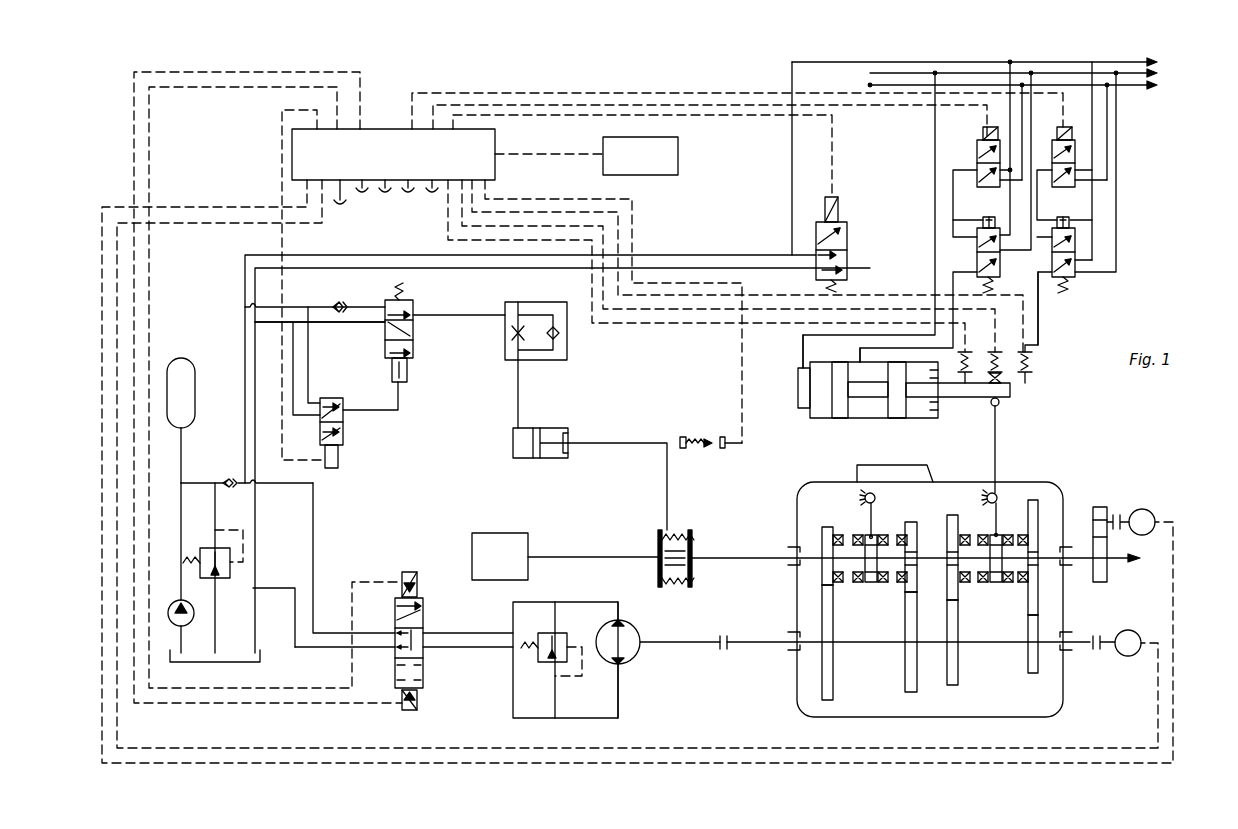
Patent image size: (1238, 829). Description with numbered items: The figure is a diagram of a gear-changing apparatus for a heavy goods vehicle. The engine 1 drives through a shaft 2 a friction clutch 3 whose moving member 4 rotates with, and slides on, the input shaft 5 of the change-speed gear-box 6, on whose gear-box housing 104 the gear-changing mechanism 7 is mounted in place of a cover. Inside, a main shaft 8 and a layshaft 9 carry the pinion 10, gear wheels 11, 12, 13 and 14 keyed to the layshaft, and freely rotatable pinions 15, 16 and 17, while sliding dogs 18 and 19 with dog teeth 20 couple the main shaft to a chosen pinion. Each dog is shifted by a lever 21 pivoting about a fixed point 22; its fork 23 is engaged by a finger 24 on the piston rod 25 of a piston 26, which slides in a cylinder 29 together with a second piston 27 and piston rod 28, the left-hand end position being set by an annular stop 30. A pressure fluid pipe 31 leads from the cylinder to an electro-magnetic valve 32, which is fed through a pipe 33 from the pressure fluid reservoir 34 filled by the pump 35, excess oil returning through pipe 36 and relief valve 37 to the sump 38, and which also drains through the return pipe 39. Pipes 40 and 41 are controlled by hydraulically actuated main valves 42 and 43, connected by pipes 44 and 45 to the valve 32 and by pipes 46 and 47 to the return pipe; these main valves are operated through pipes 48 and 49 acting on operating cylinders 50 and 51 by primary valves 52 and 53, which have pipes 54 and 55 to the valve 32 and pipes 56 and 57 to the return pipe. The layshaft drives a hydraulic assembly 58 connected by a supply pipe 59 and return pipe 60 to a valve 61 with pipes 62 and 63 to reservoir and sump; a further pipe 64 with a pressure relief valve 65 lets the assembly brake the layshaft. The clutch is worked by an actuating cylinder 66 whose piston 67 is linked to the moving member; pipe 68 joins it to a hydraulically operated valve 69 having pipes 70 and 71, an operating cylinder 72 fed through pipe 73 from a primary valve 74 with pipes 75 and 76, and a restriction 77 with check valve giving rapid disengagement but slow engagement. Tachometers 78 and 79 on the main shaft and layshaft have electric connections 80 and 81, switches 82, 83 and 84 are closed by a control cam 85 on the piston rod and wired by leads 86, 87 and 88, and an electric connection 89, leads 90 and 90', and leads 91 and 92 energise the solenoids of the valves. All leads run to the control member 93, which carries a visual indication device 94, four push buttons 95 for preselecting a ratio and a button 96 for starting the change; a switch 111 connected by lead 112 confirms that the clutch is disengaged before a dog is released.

The engine 1 is at (472, 543).
The shaft 2 is at (577, 557).
The friction clutch 3 is at (658, 582).
The moving member of the clutch 4 is at (667, 480).
The input shaft 5 is at (740, 558).
The change-speed gear-box 6 is at (797, 688).
The gear-changing mechanism 7 is at (857, 470).
The main shaft 8 is at (1107, 565).
The layshaft 9 is at (1088, 640).
The pinion 10 is at (824, 540).
The gear wheel 11 is at (822, 622).
The gear wheel 12 is at (905, 686).
The gear wheel 13 is at (958, 682).
The gear wheel 14 is at (1035, 673).
The pinion 15 is at (910, 524).
The pinion 16 is at (948, 530).
The pinion 17 is at (1038, 524).
The sliding dog 18 is at (871, 582).
The sliding dog 19 is at (996, 582).
The dog teeth 20 is at (838, 582).
The lever 21 is at (872, 530).
The fixed point 22 is at (864, 496).
The fork 23 is at (997, 408).
The finger 24 is at (991, 403).
The piston rod 25 is at (1010, 395).
The piston 26 is at (897, 418).
The second piston 27 is at (838, 418).
The piston rod 28 is at (862, 397).
The cylinder 29 is at (798, 410).
The annular stop 30 is at (860, 358).
The pressure fluid pipe 31 is at (935, 185).
The electro-magnetic two-position three-way valve 32 is at (847, 226).
The pipe 33 is at (426, 258).
The pressure fluid reservoir 34 is at (181, 420).
The pump 35 is at (175, 610).
The pipe 36 is at (216, 603).
The relief valve 37 is at (212, 548).
The sump 38 is at (215, 662).
The return pipe 39 is at (792, 76).
The pipe 40 is at (803, 345).
The pipe 41 is at (1040, 318).
The main valve 42 is at (1000, 272).
The main valve 43 is at (1075, 274).
The pipe 44 is at (1030, 128).
The pipe 45 is at (1116, 232).
The pipe 46 is at (1010, 232).
The pipe 47 is at (1092, 222).
The pipe 48 is at (953, 196).
The pipe 49 is at (1037, 212).
The operating cylinder 50 is at (975, 222).
The operating cylinder 51 is at (1057, 226).
The primary valve 52 is at (977, 156).
The primary valve 53 is at (1052, 158).
The pipe 54 is at (1019, 142).
The pipe 55 is at (1107, 175).
The pipe 56 is at (1010, 136).
The pipe 57 is at (1095, 132).
The hydraulic assembly 58 is at (640, 640).
The fluid supply pipe 59 is at (603, 600).
The return pipe 60 is at (608, 718).
The electro-magnetic three-position four-way valve 61 is at (423, 603).
The pipe 62 is at (342, 633).
The pipe 63 is at (335, 648).
The pipe 64 is at (555, 630).
The pressure relief valve 65 is at (544, 660).
The actuating cylinder 66 is at (565, 432).
The piston 67 is at (537, 452).
The pipe 68 is at (475, 318).
The hydraulically operated two-position three-way valve 69 is at (395, 286).
The pipe 70 is at (325, 307).
The pipe 71 is at (362, 324).
The operating cylinder 72 is at (407, 374).
The pipe 73 is at (388, 410).
The primary valve 74 is at (343, 440).
The pipe 75 is at (308, 378).
The pipe 76 is at (293, 418).
The restriction 77 is at (567, 340).
The tachometer 78 is at (1142, 509).
The tachometer 79 is at (1126, 656).
The electric connection 80 is at (213, 207).
The electric connection 81 is at (193, 223).
The electric switch 82 is at (967, 352).
The electric switch 83 is at (997, 352).
The electric switch 84 is at (1032, 362).
The control cam 85 is at (1002, 380).
The electric lead 86 is at (700, 322).
The electric lead 87 is at (740, 318).
The electric lead 88 is at (878, 298).
The electric connection 89 is at (745, 112).
The lead 90 is at (737, 98).
The lead 90' is at (710, 98).
The electric lead 91 is at (282, 138).
The electric lead 92 is at (140, 108).
The control member 93 is at (495, 172).
The visual indication device 94 is at (678, 168).
The push buttons 95 is at (433, 198).
The button 96 is at (339, 206).
The gear-box housing 104 is at (950, 717).
The switch 111 is at (692, 438).
The lead 112 is at (743, 398).